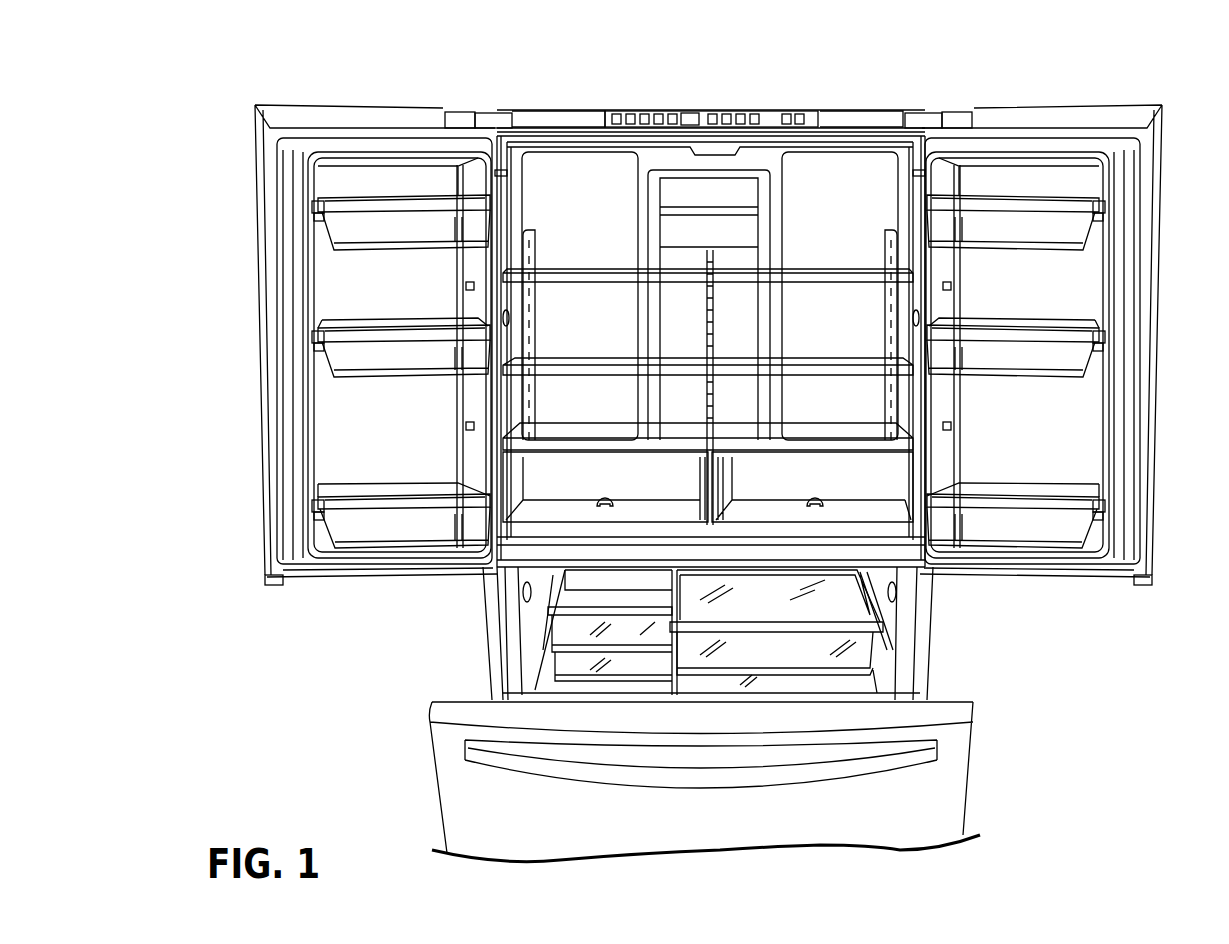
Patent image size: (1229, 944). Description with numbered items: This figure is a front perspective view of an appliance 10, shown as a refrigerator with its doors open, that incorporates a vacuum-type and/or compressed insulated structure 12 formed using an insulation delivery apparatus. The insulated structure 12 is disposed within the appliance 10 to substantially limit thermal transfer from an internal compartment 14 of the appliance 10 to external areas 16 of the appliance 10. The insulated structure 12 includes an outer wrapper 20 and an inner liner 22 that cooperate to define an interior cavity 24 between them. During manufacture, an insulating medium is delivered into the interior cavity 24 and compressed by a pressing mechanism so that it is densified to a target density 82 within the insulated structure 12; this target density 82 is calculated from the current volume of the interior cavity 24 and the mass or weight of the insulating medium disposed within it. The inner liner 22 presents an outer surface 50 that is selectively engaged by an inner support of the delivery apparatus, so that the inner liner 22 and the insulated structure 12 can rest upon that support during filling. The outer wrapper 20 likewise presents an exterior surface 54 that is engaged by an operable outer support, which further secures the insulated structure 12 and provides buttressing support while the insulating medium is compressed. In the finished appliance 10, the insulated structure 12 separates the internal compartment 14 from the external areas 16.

The appliance 10 is at (734, 441).
The insulated structure 12 is at (681, 365).
The internal compartment 14 is at (778, 393).
The external areas 16 is at (998, 646).
The outer wrapper 20 is at (583, 108).
The inner liner 22 is at (505, 422).
The interior cavity 24 is at (858, 120).
The outer surface 50 is at (848, 226).
The exterior surface 54 is at (540, 120).
The target density 82 is at (905, 414).